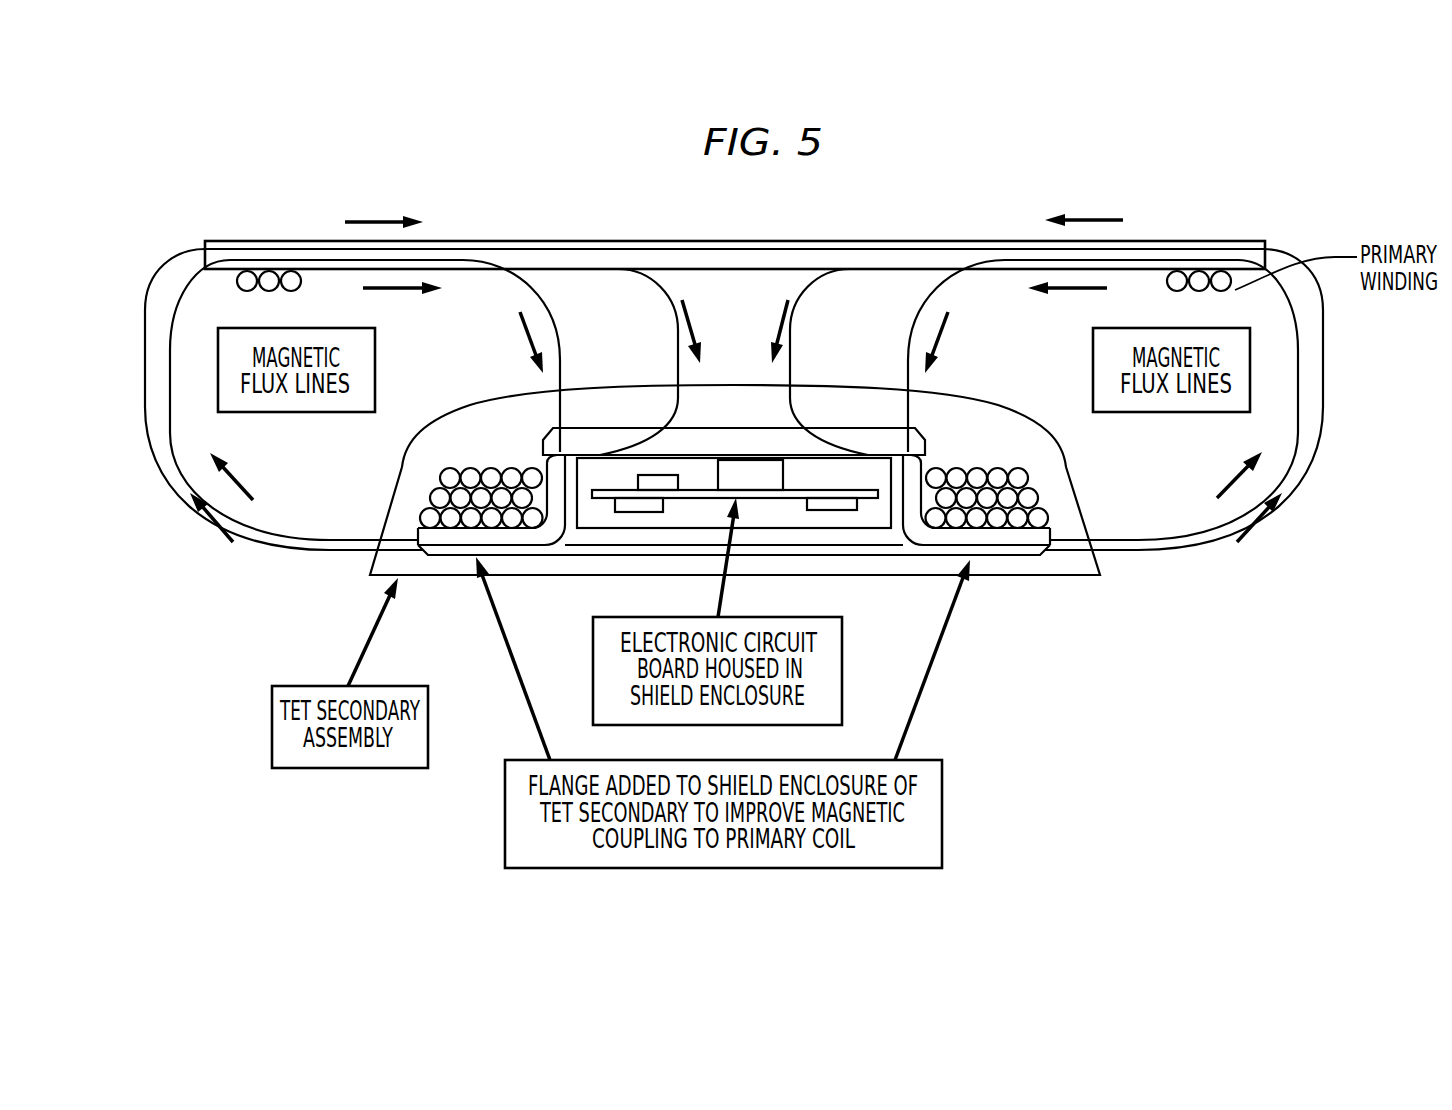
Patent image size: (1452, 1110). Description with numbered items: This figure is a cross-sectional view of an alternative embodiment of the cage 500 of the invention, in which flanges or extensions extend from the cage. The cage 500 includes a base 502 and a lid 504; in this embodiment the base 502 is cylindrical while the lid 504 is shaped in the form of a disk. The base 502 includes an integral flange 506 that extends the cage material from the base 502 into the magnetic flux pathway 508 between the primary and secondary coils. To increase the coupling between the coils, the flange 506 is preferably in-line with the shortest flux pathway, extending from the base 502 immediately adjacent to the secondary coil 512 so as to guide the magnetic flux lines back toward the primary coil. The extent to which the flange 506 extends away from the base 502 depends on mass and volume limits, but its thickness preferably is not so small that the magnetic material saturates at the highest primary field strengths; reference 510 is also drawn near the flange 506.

The cage 500 is at (464, 741).
The base 502 is at (858, 540).
The lid 504 is at (734, 447).
The flange 506 is at (1025, 542).
The magnetic flux pathway 508 is at (1168, 540).
The shield enclosure side wall 510 is at (920, 466).
The secondary coil 512 is at (1008, 448).